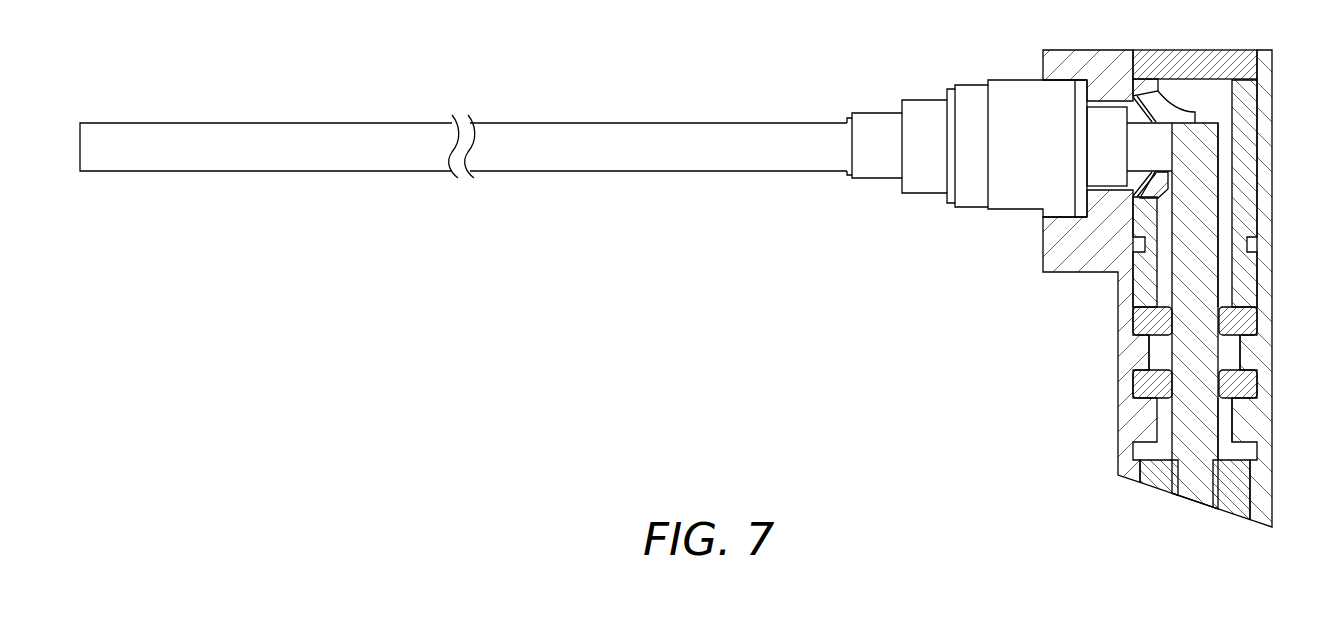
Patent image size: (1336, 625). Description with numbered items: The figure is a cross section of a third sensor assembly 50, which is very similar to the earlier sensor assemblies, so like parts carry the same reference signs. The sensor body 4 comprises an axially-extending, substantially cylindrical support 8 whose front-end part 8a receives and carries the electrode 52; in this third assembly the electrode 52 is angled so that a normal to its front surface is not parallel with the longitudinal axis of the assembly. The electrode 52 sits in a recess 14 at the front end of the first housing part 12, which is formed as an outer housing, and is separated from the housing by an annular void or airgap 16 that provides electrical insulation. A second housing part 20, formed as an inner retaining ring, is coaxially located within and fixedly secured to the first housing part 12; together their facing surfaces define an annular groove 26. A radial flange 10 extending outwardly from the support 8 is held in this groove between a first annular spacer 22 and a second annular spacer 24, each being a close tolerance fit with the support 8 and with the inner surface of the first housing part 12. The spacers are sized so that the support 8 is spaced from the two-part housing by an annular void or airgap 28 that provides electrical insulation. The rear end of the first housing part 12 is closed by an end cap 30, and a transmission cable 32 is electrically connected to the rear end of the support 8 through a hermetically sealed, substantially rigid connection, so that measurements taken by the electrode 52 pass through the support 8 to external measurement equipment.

The transmission cable 32 is at (680, 93).
The end cap 30 is at (1190, 58).
The support 8 is at (1215, 145).
The front-end part of the support 8a is at (1191, 493).
The second housing part 20 is at (1247, 180).
The sensor body 4 is at (1213, 212).
The airgap 28 is at (1163, 280).
The second annular spacer 24 is at (1248, 320).
The annular groove 26 is at (1142, 352).
The radial flange 10 is at (1236, 351).
The first annular spacer 22 is at (1248, 383).
The first housing part 12 is at (1129, 416).
The recess 14 is at (1250, 448).
The airgap 16 is at (1138, 476).
The electrode 52 is at (1232, 505).
The third sensor assembly 50 is at (1088, 452).